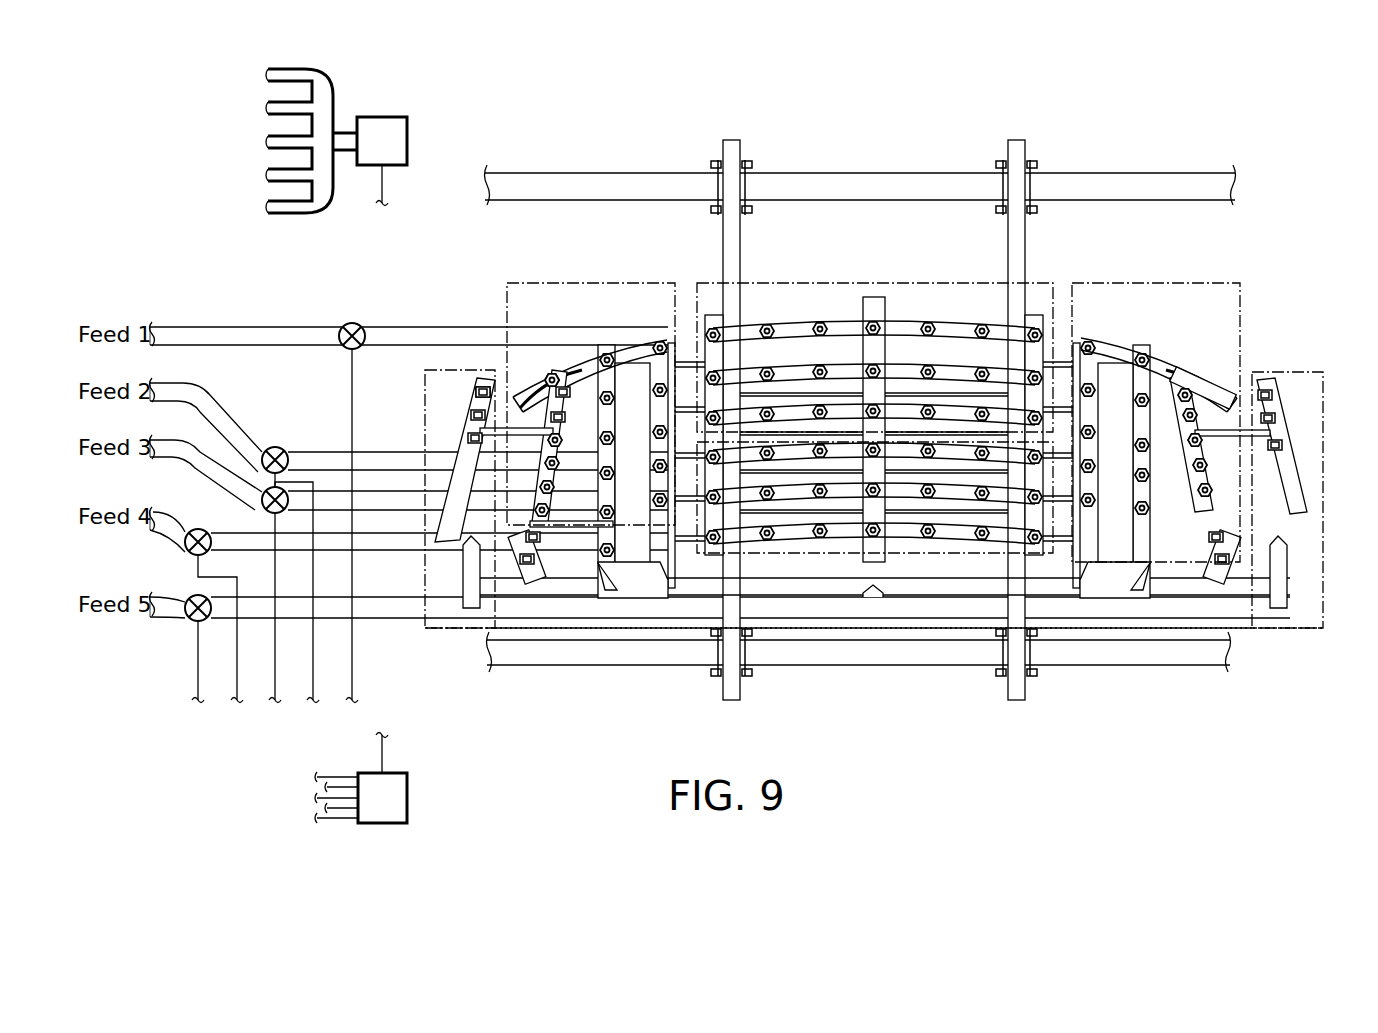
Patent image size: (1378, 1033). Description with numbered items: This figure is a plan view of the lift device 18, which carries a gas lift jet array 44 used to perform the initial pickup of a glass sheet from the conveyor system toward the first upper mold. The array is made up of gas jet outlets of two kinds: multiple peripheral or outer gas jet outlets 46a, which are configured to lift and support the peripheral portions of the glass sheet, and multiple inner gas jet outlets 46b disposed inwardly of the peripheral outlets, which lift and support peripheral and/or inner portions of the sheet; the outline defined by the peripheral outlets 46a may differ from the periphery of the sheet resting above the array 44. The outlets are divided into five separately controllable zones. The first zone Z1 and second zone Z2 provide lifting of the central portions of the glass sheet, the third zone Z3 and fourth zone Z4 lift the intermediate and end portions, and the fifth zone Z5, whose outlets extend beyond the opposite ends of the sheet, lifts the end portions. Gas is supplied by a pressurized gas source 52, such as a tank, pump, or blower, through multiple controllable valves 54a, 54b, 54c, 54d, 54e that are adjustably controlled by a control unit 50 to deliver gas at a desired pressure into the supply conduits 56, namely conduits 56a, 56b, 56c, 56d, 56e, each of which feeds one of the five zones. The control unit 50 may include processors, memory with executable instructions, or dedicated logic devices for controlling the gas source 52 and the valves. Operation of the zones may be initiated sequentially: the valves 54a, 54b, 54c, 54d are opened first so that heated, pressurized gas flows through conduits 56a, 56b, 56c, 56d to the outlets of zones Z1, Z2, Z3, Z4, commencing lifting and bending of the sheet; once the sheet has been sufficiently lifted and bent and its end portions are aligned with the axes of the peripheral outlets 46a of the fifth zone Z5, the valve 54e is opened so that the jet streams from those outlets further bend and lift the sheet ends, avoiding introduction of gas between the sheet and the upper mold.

The lift device 18 is at (868, 430).
The gas lift jet array 44 is at (868, 422).
The peripheral gas jet outlets 46a is at (470, 436).
The inner gas jet outlets 46b is at (560, 412).
The control unit 50 is at (407, 798).
The pressurized gas source 52 is at (407, 140).
The controllable valve 54a is at (352, 322).
The controllable valve 54b is at (278, 447).
The controllable valve 54c is at (262, 492).
The controllable valve 54d is at (190, 556).
The controllable valve 54e is at (195, 623).
The supply conduits 56 is at (290, 81).
The supply conduit 56a is at (402, 326).
The supply conduit 56b is at (358, 452).
The supply conduit 56c is at (368, 535).
The supply conduit 56d is at (358, 555).
The supply conduit 56e is at (368, 622).
The first zone Z1 is at (875, 283).
The second zone Z2 is at (970, 560).
The third zone Z3 is at (1155, 283).
The fourth zone Z4 is at (597, 283).
The fifth zone Z5 is at (1058, 628).